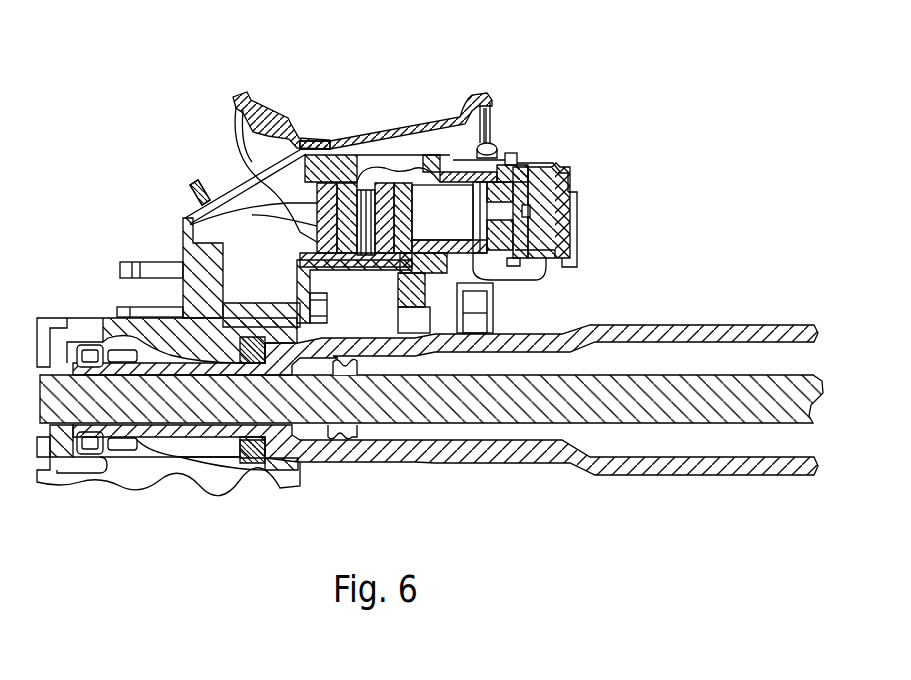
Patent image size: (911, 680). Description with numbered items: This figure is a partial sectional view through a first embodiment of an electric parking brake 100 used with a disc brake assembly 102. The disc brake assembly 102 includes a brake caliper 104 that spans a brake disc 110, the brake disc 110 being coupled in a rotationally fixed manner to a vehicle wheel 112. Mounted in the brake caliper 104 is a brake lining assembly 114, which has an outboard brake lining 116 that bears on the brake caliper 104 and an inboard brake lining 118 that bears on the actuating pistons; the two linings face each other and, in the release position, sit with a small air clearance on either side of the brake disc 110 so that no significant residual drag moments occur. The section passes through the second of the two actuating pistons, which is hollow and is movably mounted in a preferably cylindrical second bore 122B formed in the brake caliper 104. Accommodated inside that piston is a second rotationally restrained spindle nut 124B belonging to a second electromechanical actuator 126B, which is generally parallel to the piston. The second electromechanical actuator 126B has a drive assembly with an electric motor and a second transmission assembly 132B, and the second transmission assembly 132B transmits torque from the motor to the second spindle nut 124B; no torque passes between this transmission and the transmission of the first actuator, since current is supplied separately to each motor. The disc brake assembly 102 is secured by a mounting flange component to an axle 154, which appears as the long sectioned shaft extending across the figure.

The electric parking brake 100 is at (517, 290).
The disc brake assembly 102 is at (323, 131).
The brake caliper 104 is at (252, 215).
The brake disc 110 is at (342, 183).
The vehicle wheel 112 is at (266, 110).
The brake lining assembly 114 is at (314, 189).
The outboard brake lining 116 is at (305, 193).
The inboard brake lining 118 is at (390, 185).
The second bore 122B is at (478, 95).
The second rotationally restrained spindle nut 124B is at (505, 190).
The second electromechanical actuator 126B is at (531, 160).
The second transmission assembly 132B is at (550, 163).
The axle 154 is at (738, 312).